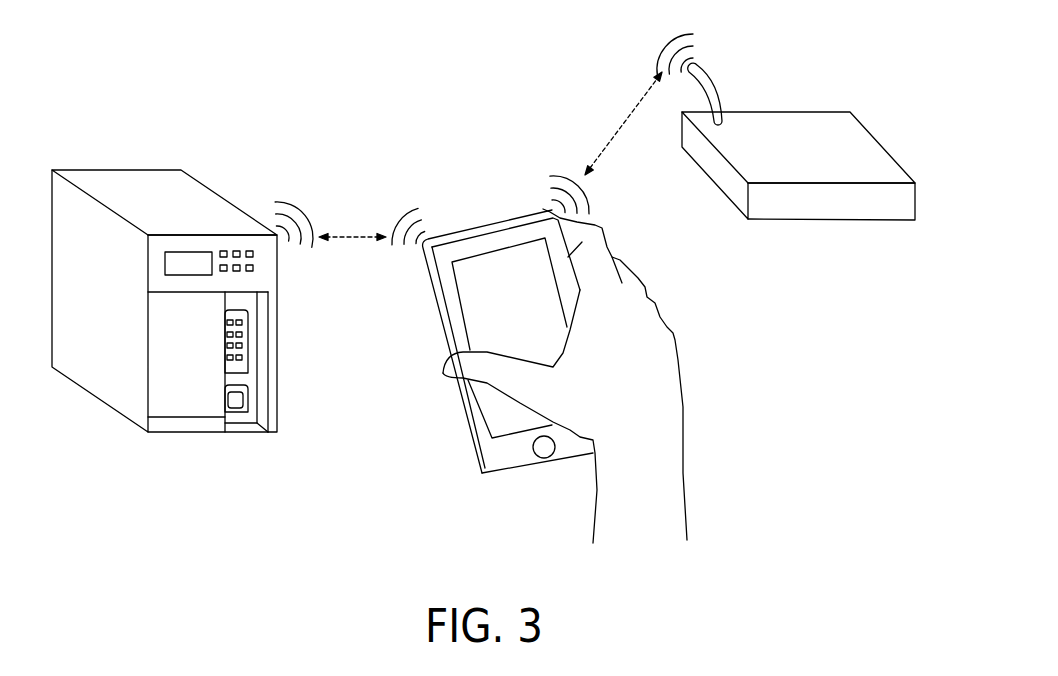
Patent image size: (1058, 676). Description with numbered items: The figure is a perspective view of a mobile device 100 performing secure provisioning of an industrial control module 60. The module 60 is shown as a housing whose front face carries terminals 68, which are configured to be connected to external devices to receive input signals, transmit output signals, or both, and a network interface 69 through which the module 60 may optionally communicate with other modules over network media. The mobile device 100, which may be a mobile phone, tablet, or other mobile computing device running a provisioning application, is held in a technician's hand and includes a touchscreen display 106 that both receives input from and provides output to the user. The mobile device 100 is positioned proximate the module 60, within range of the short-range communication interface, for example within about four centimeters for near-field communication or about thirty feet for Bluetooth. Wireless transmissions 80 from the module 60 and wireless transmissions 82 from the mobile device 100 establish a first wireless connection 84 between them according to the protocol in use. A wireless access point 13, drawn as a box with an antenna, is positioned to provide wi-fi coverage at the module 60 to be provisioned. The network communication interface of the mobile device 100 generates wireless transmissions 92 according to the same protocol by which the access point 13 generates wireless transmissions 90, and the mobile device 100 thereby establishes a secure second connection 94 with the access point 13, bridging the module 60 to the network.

The wireless access point 13 is at (878, 140).
The module 60 is at (120, 180).
The terminals 68 is at (248, 358).
The network interface 69 is at (235, 432).
The wireless transmission 80 is at (270, 203).
The wireless transmission 82 is at (430, 207).
The first wireless connection 84 is at (348, 235).
The wireless transmission 90 is at (702, 35).
The wireless transmission 92 is at (552, 173).
The second connection 94 is at (618, 132).
The mobile device 100 is at (458, 428).
The touchscreen display 106 is at (478, 272).